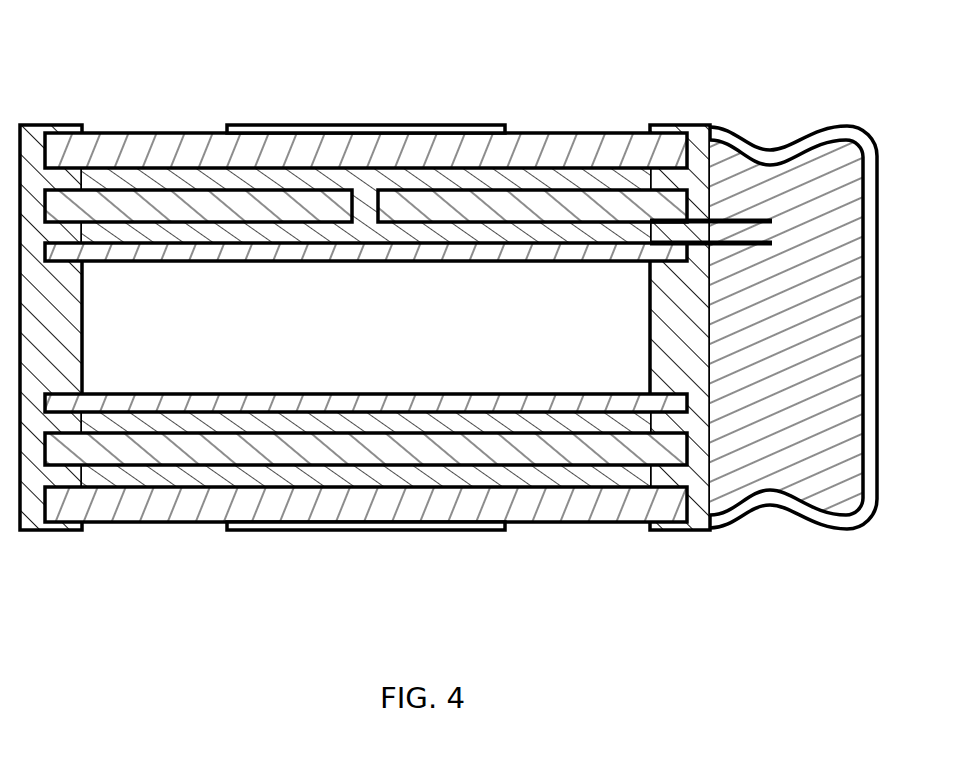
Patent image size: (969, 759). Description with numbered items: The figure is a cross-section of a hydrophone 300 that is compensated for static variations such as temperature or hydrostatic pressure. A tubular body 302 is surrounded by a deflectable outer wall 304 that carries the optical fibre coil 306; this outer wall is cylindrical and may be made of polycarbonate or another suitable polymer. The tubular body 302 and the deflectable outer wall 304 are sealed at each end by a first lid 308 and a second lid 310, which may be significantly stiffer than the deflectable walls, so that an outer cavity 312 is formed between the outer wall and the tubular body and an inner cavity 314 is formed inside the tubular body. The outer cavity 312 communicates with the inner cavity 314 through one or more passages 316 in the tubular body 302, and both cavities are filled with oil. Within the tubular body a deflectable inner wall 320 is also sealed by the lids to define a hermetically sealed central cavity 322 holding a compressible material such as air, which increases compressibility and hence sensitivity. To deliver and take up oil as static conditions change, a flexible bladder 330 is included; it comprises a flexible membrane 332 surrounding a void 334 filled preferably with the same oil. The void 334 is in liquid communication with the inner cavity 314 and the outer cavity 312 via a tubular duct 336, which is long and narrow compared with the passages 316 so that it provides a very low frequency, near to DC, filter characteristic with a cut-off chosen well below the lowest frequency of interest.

The hydrophone 300 is at (771, 38).
The tubular body 302 is at (187, 212).
The deflectable outer wall 304 is at (201, 158).
The optical fibre coil 306 is at (503, 118).
The first lid 308 is at (37, 470).
The second lid 310 is at (690, 365).
The outer cavity 312 is at (285, 182).
The inner cavity 314 is at (267, 420).
The passages 316 is at (368, 196).
The deflectable inner wall 320 is at (605, 252).
The central cavity 322 is at (420, 343).
The bladder 330 is at (800, 391).
The flexible membrane 332 is at (768, 497).
The void 334 is at (812, 315).
The tubular duct 336 is at (724, 236).